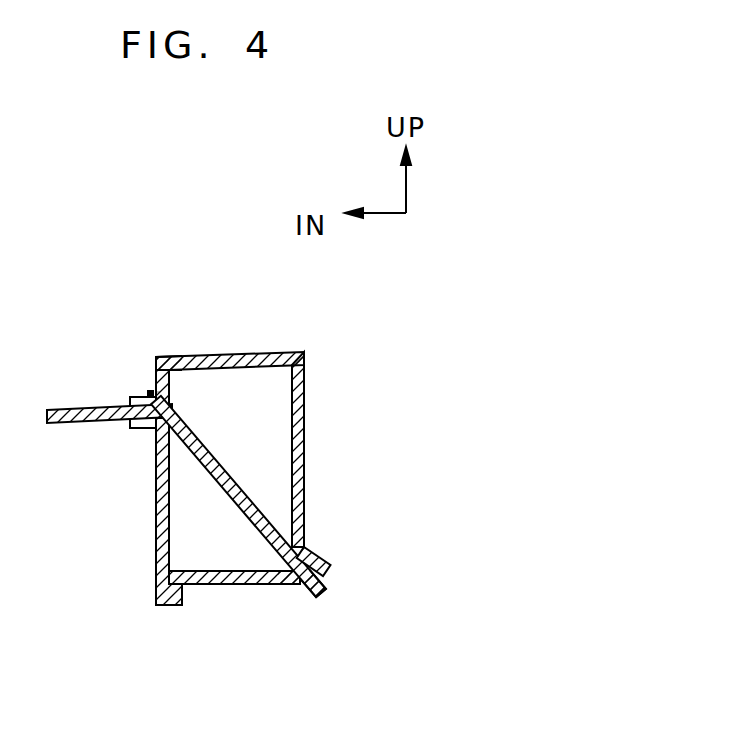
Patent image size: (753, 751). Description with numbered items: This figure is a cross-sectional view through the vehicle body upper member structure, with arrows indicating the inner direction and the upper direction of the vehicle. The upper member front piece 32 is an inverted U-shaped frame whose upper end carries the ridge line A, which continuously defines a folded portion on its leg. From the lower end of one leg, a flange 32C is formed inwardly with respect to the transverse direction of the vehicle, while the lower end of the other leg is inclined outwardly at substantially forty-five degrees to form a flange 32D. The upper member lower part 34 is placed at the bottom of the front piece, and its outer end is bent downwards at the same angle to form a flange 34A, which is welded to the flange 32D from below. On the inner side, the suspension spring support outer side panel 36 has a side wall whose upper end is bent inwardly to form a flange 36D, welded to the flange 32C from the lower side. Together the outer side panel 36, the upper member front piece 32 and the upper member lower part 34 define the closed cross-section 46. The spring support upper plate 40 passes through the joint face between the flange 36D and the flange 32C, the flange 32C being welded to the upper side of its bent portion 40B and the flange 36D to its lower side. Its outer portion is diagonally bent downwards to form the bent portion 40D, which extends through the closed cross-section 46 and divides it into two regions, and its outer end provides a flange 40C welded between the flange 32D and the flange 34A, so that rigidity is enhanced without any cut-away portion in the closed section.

The upper member front piece 32 is at (305, 413).
The flange 32C is at (135, 398).
The flange 32D is at (317, 553).
The upper member lower part 34 is at (217, 587).
The flange 34A is at (294, 591).
The suspension spring support outer side panel 36 is at (154, 558).
The flange 36D is at (137, 429).
The spring support upper plate 40 is at (58, 398).
The bent portion 40B is at (150, 391).
The flange 40C is at (322, 562).
The bent portion 40D is at (217, 465).
The closed cross-section 46 is at (282, 472).
The ridge line A is at (157, 391).